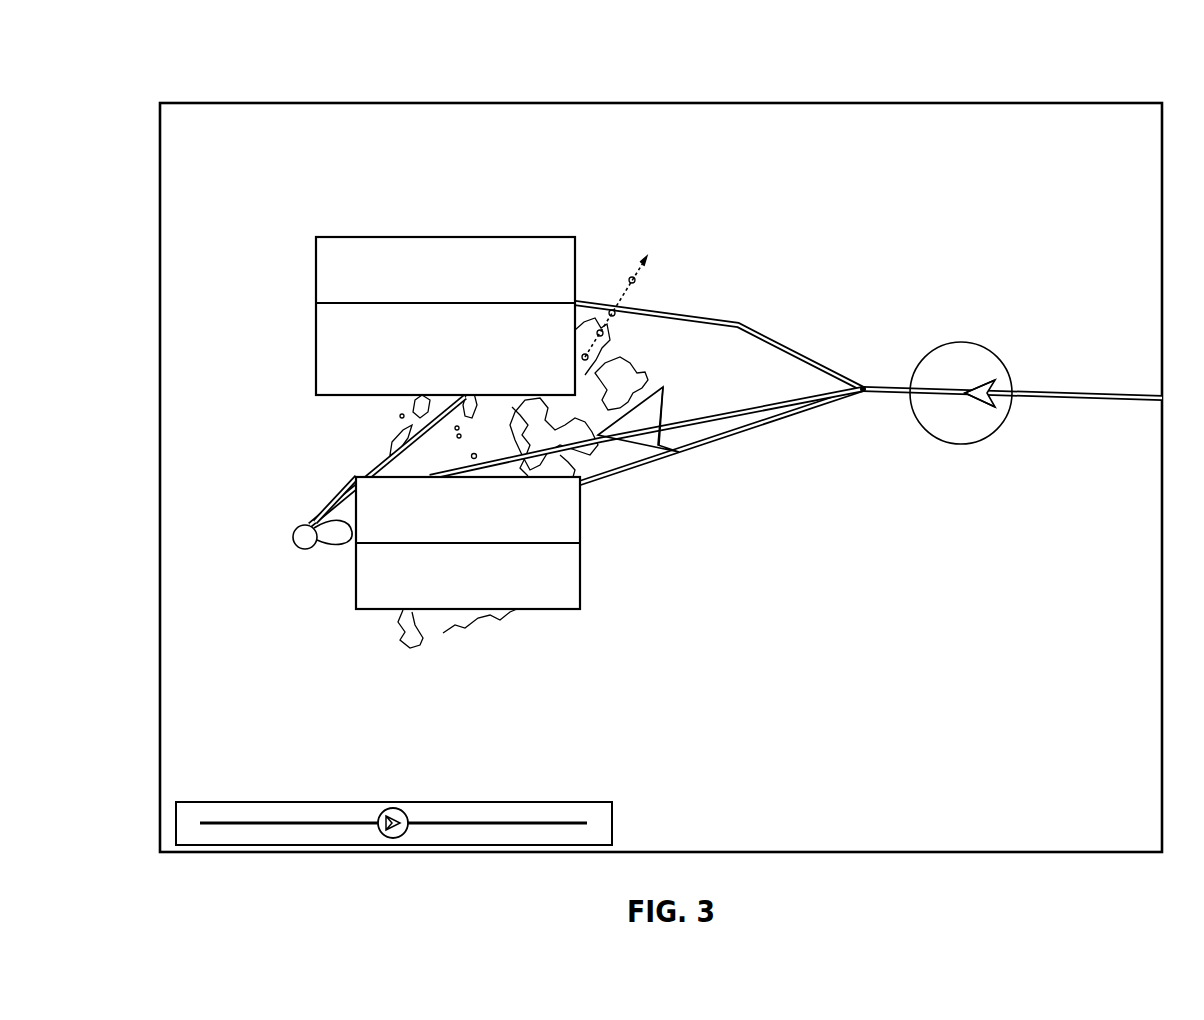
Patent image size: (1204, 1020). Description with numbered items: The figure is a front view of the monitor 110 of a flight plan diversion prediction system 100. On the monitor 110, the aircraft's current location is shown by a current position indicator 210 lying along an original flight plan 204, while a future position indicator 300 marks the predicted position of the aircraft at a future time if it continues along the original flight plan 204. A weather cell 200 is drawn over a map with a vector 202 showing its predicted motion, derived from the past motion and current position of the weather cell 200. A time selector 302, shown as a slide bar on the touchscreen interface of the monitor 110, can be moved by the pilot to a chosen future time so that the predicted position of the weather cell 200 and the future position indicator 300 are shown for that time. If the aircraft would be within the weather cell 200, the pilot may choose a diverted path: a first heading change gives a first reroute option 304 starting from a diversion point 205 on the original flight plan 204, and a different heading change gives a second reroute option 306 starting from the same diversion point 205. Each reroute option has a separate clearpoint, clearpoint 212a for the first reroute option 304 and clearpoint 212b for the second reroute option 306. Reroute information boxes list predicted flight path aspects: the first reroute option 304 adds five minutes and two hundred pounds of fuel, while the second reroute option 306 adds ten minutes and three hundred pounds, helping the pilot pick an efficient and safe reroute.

The flight plan diversion prediction system 100 is at (318, 50).
The monitor 110 is at (1087, 126).
The weather cell 200 is at (610, 370).
The vector 202 is at (635, 282).
The original flight plan 204 is at (1086, 392).
The diversion point 205 is at (864, 384).
The current position indicator 210 is at (980, 382).
The clearpoint 212a is at (300, 549).
The clearpoint 212b is at (582, 303).
The future position indicator 300 is at (652, 448).
The time selector 302 is at (551, 801).
The first reroute option 304 is at (775, 430).
The second reroute option 306 is at (762, 331).